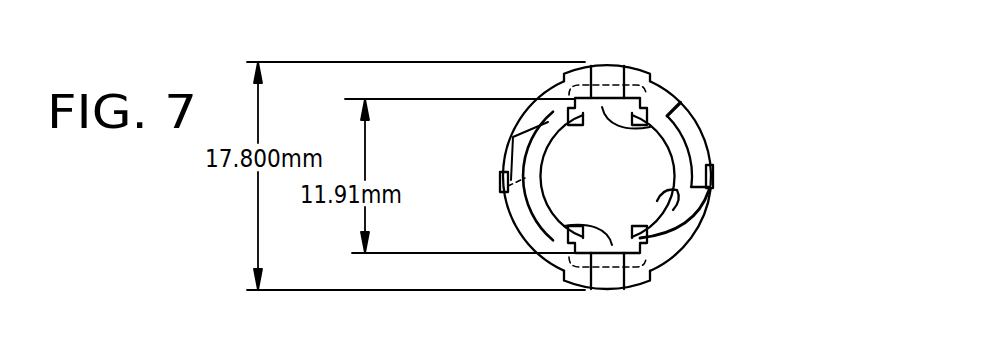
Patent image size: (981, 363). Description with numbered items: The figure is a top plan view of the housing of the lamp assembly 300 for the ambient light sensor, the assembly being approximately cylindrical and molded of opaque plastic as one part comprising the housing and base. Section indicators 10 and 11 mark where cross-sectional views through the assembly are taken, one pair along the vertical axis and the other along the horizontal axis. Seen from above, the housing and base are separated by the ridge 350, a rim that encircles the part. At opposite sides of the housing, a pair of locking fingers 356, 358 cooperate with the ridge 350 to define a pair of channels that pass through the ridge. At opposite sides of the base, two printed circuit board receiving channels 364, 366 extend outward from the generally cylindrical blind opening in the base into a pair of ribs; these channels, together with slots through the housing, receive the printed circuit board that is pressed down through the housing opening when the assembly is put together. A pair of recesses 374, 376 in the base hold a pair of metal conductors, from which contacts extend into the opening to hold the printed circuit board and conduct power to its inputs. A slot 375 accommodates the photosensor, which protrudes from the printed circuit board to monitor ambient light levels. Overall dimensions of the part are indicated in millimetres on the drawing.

The section line 10- 10 is at (607, 78).
The section line 11- 11 is at (797, 243).
The lamp assembly 300 is at (681, 80).
The ridge 350 is at (667, 244).
The locking finger 356 is at (538, 229).
The locking finger 358 is at (695, 146).
The printed circuit board receiving channel 364 is at (612, 241).
The printed circuit board receiving channel 366 is at (673, 112).
The recess 374 is at (580, 247).
The slot 375 is at (660, 209).
The recess 376 is at (583, 104).